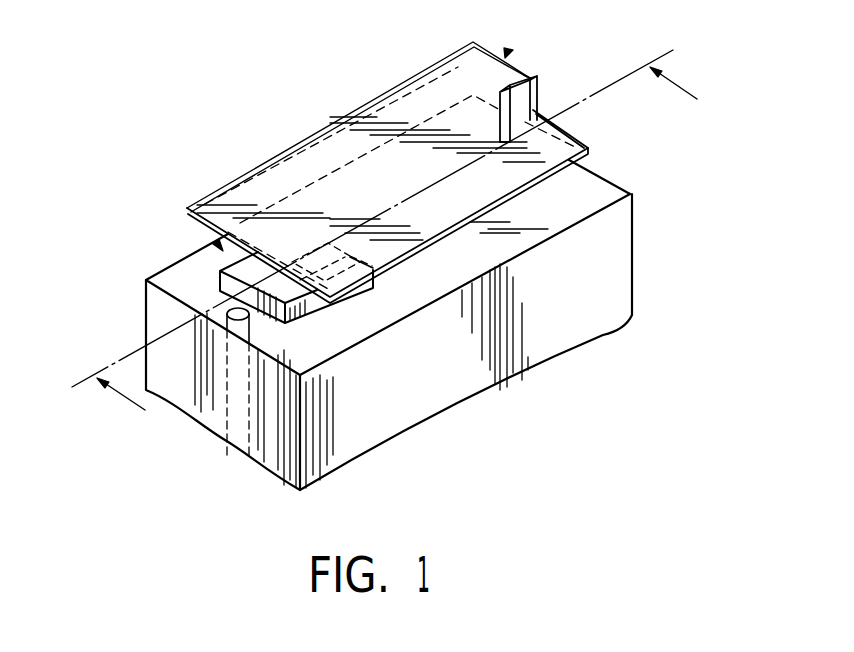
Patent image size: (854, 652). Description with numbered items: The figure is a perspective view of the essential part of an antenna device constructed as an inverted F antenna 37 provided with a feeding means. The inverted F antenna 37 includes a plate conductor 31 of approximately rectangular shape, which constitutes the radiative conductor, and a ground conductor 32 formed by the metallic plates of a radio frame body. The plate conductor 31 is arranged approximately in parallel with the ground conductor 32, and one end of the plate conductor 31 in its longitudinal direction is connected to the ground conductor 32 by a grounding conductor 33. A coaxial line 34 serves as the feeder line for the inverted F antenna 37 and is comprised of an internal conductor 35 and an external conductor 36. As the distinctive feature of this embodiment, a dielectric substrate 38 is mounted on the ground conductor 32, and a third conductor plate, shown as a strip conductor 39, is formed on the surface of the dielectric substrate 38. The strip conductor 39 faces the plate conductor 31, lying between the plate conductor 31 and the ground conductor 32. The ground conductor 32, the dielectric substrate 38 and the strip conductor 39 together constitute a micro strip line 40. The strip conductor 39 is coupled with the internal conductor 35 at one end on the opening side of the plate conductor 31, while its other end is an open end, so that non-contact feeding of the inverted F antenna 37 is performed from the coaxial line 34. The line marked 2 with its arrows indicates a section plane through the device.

The section line 2- 2 is at (398, 244).
The plate conductor 31 is at (347, 147).
The ground conductor 32 is at (588, 197).
The grounding conductor 33 is at (537, 95).
The coaxial line 34 is at (232, 418).
The internal conductor 35 is at (237, 312).
The external conductor 36 is at (228, 317).
The inverted F antenna 37 is at (507, 55).
The dielectric substrate 38 is at (297, 307).
The strip conductor 39 is at (310, 302).
The micro strip line 40 is at (220, 247).